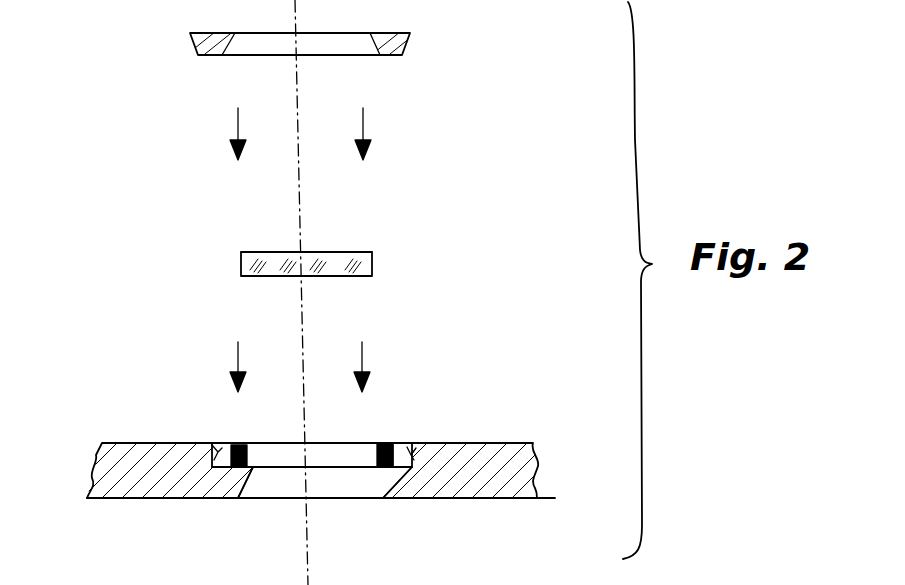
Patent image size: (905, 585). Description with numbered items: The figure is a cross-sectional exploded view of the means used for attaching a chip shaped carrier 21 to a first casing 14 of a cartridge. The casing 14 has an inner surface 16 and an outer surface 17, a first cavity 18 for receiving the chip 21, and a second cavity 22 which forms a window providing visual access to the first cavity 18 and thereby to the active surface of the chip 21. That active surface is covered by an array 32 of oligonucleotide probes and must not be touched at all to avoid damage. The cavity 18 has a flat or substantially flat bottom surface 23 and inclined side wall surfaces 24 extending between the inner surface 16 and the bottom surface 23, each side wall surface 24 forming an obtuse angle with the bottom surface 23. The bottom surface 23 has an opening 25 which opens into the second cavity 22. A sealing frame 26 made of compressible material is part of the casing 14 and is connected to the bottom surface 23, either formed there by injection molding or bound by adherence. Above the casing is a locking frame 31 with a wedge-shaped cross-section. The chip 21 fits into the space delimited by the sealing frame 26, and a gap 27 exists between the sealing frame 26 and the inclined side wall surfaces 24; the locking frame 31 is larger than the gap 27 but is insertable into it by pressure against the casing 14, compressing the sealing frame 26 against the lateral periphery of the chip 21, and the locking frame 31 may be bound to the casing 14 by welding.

The first casing 14 is at (96, 462).
The inner surface 16 is at (506, 440).
The outer surface 17 is at (515, 499).
The first cavity 18 is at (263, 455).
The chip shaped carrier 21 is at (374, 262).
The second cavity 22 is at (262, 497).
The bottom surface 23 is at (370, 467).
The inclined side wall surfaces 24 is at (218, 441).
The opening 25 is at (337, 472).
The sealing frame 26 is at (237, 443).
The gap 27 is at (398, 453).
The locking frame 31 is at (407, 42).
The array of oligonucleotide probes 32 is at (258, 250).